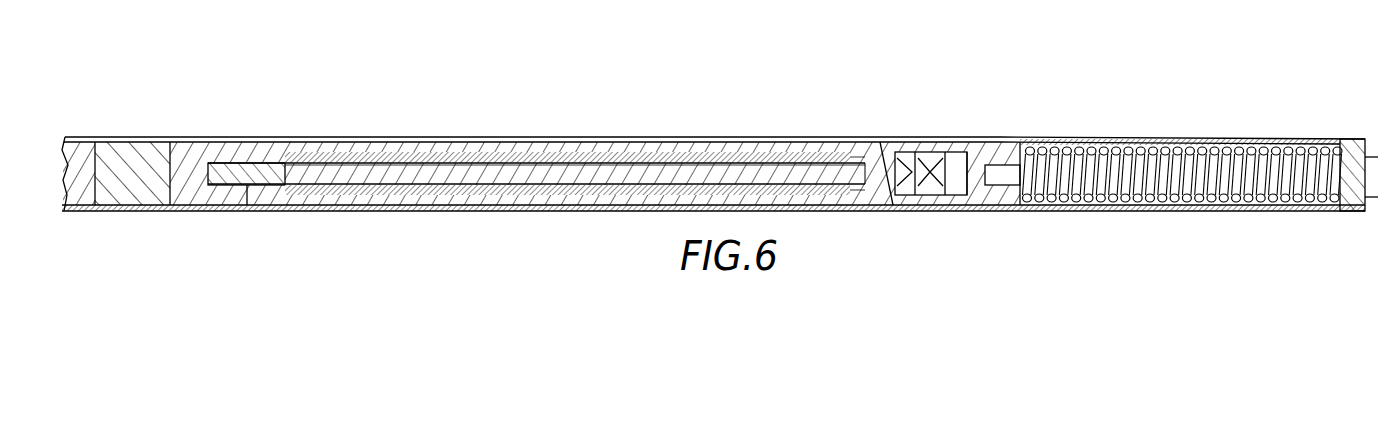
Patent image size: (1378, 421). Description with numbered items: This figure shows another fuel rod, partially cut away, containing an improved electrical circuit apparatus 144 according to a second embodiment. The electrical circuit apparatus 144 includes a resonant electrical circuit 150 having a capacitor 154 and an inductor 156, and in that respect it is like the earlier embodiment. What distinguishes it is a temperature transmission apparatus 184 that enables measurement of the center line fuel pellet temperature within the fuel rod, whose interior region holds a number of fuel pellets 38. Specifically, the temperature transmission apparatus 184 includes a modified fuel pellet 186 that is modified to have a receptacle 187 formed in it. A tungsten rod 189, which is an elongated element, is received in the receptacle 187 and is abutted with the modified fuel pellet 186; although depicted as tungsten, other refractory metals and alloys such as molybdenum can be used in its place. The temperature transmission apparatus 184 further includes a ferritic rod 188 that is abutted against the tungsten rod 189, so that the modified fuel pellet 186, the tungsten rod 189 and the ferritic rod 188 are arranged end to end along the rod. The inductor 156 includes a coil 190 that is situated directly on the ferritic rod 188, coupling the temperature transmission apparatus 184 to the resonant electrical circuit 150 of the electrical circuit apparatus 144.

The fuel pellets 38 is at (118, 140).
The modified fuel pellet 186 is at (180, 138).
The temperature transmission apparatus 184 is at (212, 137).
The tungsten rod 189 is at (262, 152).
The receptacle 187 is at (212, 193).
The coil 190 is at (376, 150).
The inductor 156 is at (663, 145).
The resonant electrical circuit 150 is at (695, 147).
The electrical circuit apparatus 144 is at (737, 147).
The ferritic rod 188 is at (832, 160).
The capacitor 154 is at (946, 145).